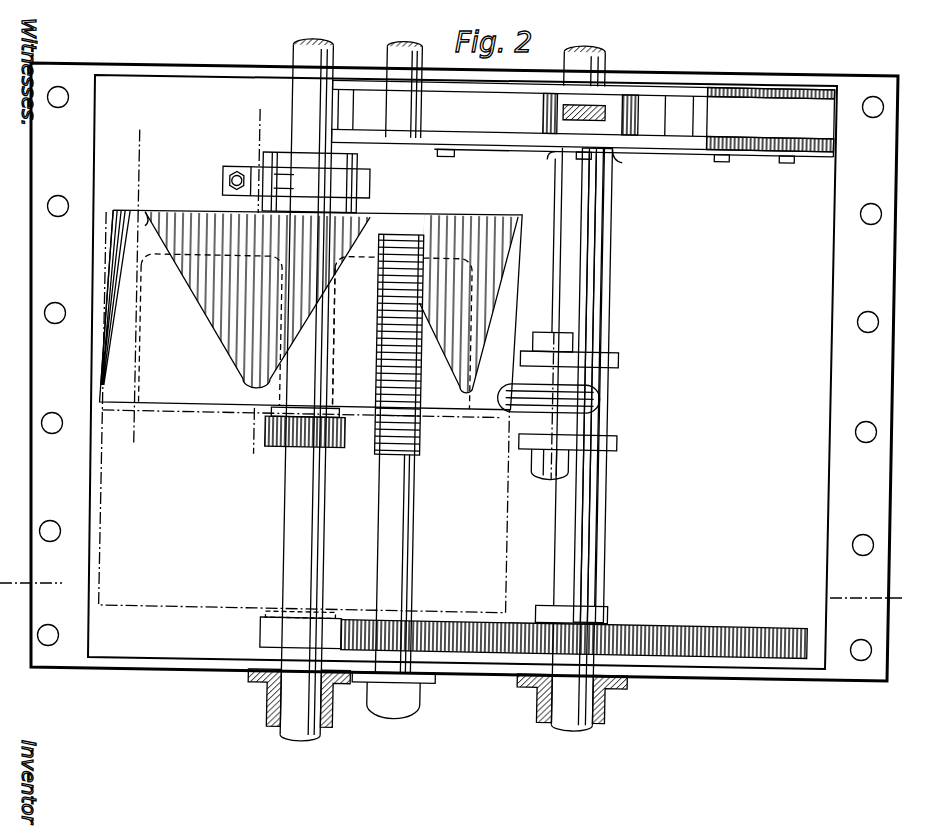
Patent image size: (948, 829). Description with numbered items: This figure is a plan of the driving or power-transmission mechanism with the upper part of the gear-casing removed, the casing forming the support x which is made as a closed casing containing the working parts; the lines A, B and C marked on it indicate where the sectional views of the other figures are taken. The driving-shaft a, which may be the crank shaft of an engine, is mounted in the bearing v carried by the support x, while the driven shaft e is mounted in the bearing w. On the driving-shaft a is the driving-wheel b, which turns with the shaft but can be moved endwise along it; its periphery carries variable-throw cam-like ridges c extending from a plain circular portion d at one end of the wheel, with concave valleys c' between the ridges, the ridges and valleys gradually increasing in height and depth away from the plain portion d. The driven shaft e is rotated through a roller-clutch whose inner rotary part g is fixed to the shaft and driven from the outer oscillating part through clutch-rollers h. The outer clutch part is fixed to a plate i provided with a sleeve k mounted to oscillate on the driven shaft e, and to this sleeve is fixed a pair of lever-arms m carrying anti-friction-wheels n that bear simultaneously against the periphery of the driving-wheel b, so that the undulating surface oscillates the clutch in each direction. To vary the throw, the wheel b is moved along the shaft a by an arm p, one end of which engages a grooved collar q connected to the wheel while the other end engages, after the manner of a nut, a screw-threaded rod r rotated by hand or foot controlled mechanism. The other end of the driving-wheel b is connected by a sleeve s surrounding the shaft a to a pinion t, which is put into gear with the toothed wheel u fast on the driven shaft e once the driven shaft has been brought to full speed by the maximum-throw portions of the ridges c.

The support x is at (176, 74).
The section line A A is at (452, 582).
The driving-shaft a is at (272, 530).
The screw-threaded rod r is at (406, 486).
The driven shaft e is at (600, 66).
The inner rotary part g is at (583, 109).
The plate i is at (698, 158).
The clutch-rollers h is at (585, 114).
The sleeve k is at (606, 240).
The grooved collar q is at (309, 182).
The arm p is at (297, 182).
The cam-like ridges c is at (321, 305).
The valleys c' is at (289, 286).
The sleeve s is at (334, 338).
The section line B B is at (137, 294).
The section line C C is at (256, 284).
The driving-wheel b is at (166, 612).
The plain circular portion d is at (189, 408).
The pinion t is at (340, 448).
The toothed wheel u is at (682, 630).
The lever-arms m is at (570, 316).
The anti-friction-wheels n is at (604, 398).
The bearing v is at (268, 700).
The bearing w is at (606, 706).